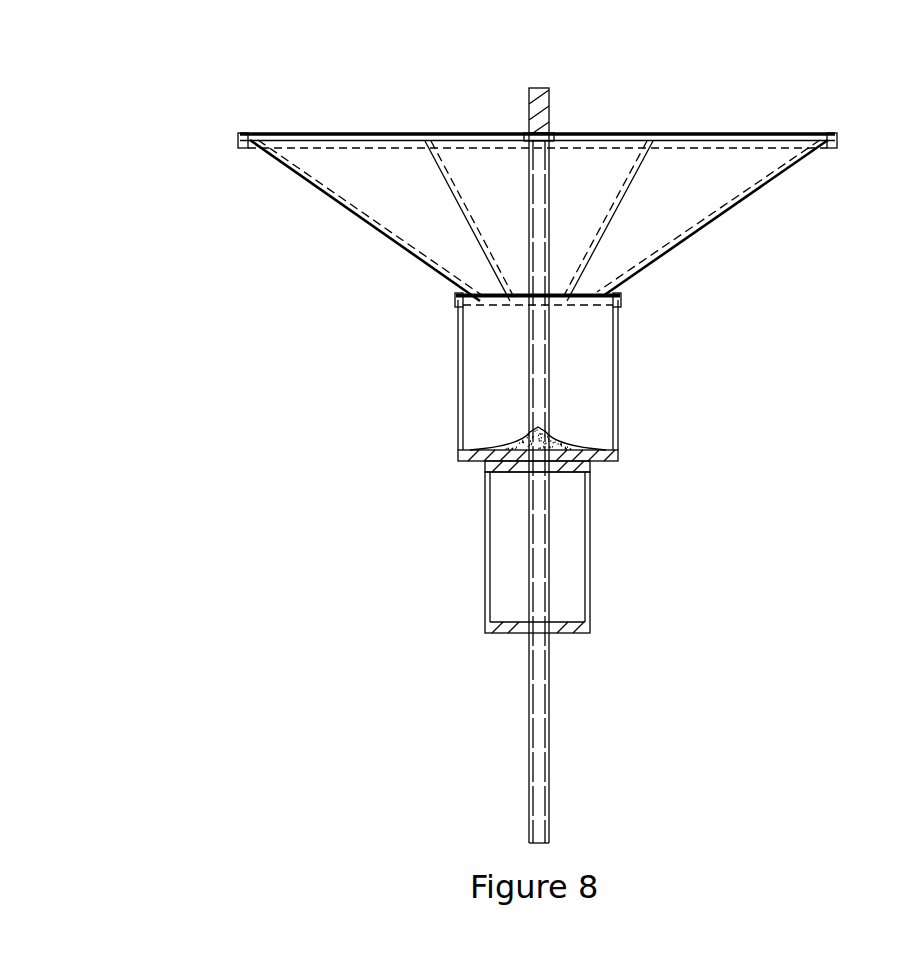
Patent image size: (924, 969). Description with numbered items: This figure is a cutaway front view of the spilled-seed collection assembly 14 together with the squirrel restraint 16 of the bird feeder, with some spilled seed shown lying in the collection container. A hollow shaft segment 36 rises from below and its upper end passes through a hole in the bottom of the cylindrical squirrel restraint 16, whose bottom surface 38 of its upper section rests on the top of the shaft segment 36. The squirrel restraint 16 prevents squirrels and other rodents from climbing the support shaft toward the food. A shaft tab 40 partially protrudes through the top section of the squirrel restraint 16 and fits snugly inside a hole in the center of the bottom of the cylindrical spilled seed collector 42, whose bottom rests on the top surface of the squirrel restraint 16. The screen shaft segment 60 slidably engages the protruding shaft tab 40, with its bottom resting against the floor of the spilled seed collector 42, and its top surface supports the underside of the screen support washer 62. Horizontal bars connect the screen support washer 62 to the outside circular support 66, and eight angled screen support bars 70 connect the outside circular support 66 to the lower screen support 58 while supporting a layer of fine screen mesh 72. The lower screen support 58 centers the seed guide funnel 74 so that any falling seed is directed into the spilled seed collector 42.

The spilled-seed collection assembly 14 is at (478, 297).
The squirrel restraint 16 is at (484, 547).
The hollow shaft segment 36 is at (530, 440).
The bottom surface of the upper section of the squirrel restraint 38 is at (573, 473).
The shaft tab 40 is at (533, 432).
The spilled seed collector 42 is at (572, 363).
The lower screen support 58 is at (622, 296).
The screen shaft segment 60 is at (530, 115).
The screen support washer 62 is at (560, 131).
The outside circular support 66 is at (237, 146).
The angled screen support bars 70 is at (383, 232).
The fine screen mesh 72 is at (650, 210).
The seed guide funnel 74 is at (490, 246).